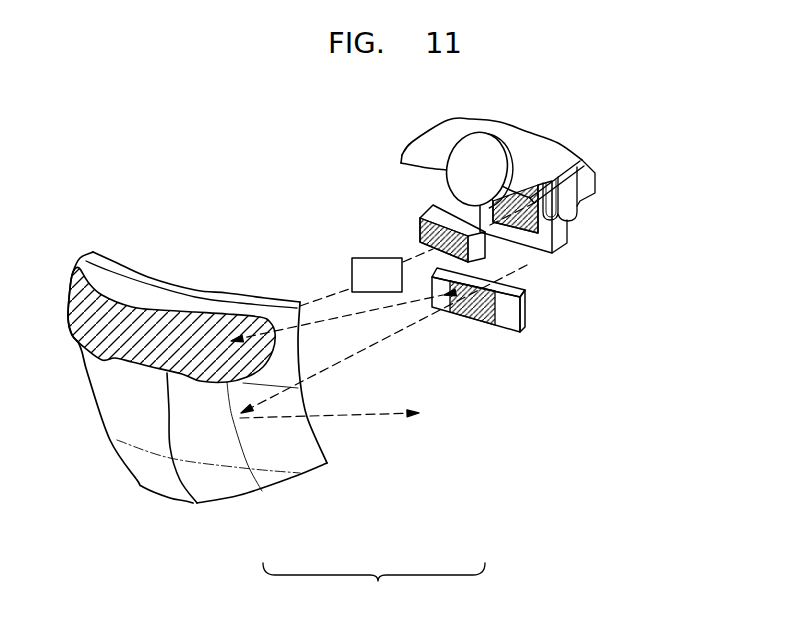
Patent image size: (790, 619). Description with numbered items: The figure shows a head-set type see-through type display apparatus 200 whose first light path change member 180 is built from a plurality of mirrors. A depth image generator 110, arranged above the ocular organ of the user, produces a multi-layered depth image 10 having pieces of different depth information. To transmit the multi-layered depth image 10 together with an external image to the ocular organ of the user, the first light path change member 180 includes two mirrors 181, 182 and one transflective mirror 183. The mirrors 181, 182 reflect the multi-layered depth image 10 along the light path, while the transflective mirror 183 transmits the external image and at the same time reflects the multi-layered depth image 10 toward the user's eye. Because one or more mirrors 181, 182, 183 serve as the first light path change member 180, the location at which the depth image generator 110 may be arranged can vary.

The see-through type display apparatus 200 is at (568, 110).
The depth image generator 110 is at (428, 218).
The multi-layered depth image 10 is at (378, 258).
The first light path change member 180 is at (374, 586).
The mirror 181 is at (193, 503).
The mirror 182 is at (473, 317).
The transflective mirror 183 is at (237, 485).